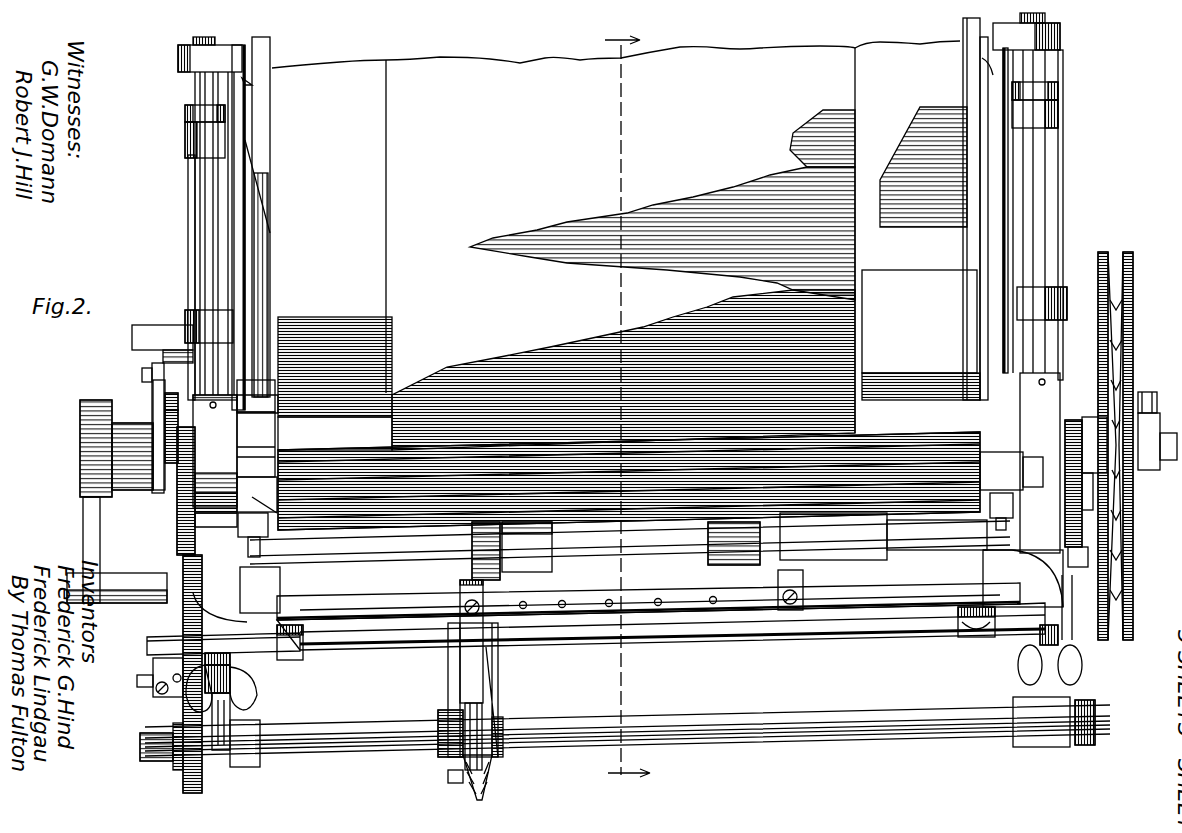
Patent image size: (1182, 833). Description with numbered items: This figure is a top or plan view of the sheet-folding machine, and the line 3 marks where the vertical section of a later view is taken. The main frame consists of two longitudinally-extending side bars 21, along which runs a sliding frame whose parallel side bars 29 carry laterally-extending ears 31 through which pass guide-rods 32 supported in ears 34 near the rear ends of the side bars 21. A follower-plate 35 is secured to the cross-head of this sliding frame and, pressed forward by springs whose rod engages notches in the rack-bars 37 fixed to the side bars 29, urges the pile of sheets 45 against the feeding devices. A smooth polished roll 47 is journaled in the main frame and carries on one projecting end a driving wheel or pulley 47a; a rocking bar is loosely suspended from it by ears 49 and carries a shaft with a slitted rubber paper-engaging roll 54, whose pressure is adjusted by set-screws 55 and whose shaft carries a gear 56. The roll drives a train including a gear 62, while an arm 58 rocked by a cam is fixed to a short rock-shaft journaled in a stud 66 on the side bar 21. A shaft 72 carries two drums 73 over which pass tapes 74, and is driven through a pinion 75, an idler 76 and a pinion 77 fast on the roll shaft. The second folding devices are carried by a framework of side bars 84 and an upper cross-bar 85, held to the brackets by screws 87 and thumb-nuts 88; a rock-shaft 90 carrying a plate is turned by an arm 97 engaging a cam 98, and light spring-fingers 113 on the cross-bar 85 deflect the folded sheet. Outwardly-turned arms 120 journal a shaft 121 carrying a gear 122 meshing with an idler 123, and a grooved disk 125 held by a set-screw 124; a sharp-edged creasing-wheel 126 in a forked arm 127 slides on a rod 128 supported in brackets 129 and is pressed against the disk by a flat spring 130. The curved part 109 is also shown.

The section line 3 3 is at (627, 410).
The side bars 21 is at (190, 237).
The side bars of sliding frame 29 is at (237, 108).
The ears 31 is at (178, 62).
The guide-rods 32 is at (207, 197).
The ears 34 is at (215, 135).
The follower-plate 35 is at (870, 57).
The rack-bars 37 is at (266, 56).
The pile of sheets 45 is at (722, 57).
The roll 47 is at (1167, 433).
The driving wheel or pulley 47a is at (1117, 640).
The ears 49 is at (275, 505).
The paper-engaging roll 54 is at (913, 447).
The set-screws 55 is at (248, 542).
The gear 56 is at (190, 463).
The arm 58 is at (147, 376).
The gear 62 is at (165, 395).
The stud 66 is at (172, 325).
The shaft 72 is at (942, 542).
The drums 73 is at (532, 562).
The tapes 74 is at (487, 532).
The pinion 75 is at (1100, 584).
The idler 76 is at (1067, 506).
The pinion 77 is at (1077, 418).
The side bars 84 is at (290, 592).
The upper cross-bar 85 is at (348, 602).
The screws 87 is at (230, 666).
The thumb-nuts 88 is at (237, 694).
The rock-shaft 90 is at (142, 590).
The arm 97 is at (168, 515).
The cam 98 is at (95, 440).
The curved arm 109 is at (200, 593).
The spring-fingers 113 is at (462, 583).
The arms 120 is at (1053, 690).
The shaft 121 is at (380, 724).
The gear 122 is at (207, 788).
The idler 123 is at (173, 700).
The set-screw 124 is at (448, 787).
The disk 125 is at (490, 790).
The creasing-wheel 126 is at (487, 727).
The forked arm 127 is at (493, 687).
The rod 128 is at (703, 628).
The brackets 129 is at (305, 652).
The flat spring 130 is at (473, 638).